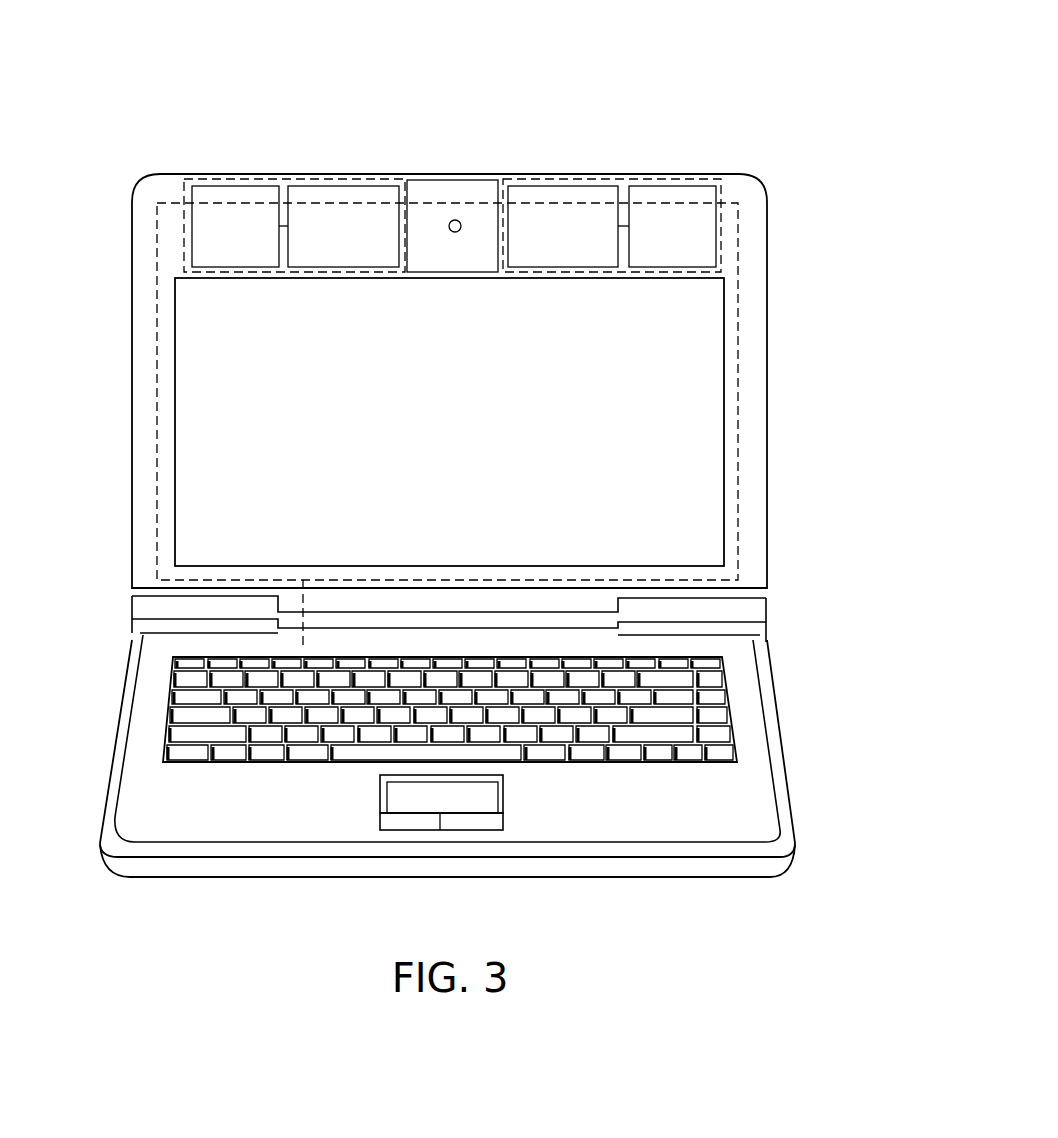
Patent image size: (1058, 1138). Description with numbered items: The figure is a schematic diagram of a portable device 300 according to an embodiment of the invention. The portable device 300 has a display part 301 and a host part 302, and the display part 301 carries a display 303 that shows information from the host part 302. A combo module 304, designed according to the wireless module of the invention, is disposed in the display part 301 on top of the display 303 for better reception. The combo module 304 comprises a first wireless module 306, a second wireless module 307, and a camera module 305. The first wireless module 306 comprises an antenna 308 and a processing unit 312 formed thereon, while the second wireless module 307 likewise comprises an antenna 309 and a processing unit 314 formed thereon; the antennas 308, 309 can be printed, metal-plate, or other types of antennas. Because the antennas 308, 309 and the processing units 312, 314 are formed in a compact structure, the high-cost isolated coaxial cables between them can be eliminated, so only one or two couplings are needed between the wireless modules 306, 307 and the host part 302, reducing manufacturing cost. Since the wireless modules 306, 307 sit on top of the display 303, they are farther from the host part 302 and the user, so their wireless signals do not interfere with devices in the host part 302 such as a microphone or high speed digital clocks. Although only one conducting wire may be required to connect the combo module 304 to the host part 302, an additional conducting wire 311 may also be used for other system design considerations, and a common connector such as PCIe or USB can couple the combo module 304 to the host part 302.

The portable device 300 is at (690, 60).
The display part 301 is at (131, 275).
The host part 302 is at (773, 697).
The display 303 is at (724, 367).
The combo module 304 is at (775, 132).
The camera module 305 is at (452, 180).
The first wireless module 306 is at (183, 195).
The second wireless module 307 is at (722, 197).
The antenna 308 is at (234, 186).
The antenna 309 is at (678, 186).
The additional conducting wire 311 is at (739, 510).
The processing unit 312 is at (342, 186).
The processing unit 314 is at (571, 186).